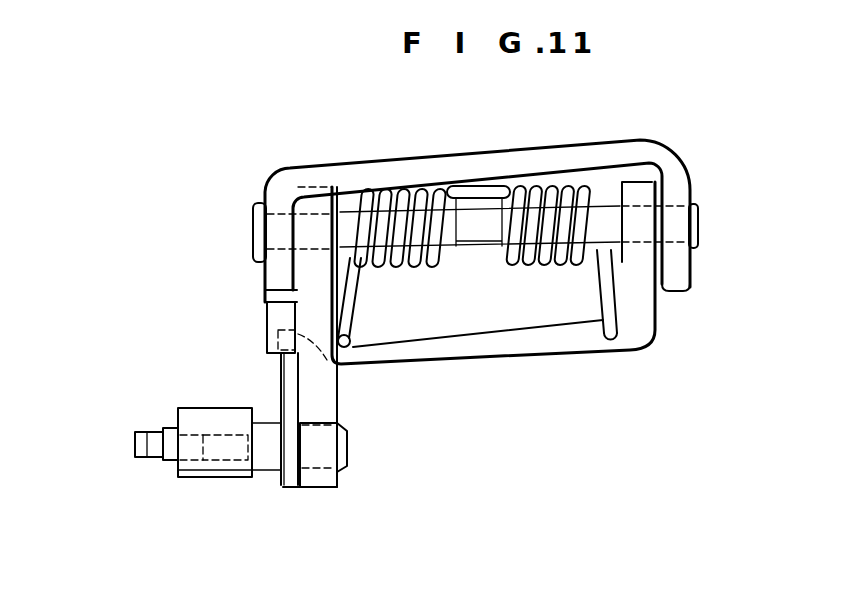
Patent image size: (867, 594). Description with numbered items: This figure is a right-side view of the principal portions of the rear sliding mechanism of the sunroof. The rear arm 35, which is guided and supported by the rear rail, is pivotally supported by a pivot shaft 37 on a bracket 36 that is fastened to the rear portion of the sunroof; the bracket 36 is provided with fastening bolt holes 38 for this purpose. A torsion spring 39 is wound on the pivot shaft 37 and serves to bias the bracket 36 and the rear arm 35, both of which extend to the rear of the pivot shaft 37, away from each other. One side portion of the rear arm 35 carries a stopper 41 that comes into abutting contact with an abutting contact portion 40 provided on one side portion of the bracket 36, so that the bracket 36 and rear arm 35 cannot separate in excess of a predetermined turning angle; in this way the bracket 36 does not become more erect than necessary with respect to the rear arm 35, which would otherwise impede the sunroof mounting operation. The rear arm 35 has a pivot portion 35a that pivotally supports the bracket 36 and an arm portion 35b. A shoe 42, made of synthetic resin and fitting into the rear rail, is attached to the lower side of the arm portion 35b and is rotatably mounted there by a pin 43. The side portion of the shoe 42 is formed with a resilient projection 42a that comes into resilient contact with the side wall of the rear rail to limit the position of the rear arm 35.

The rear arm 35 is at (656, 354).
The pivot portion 35a is at (266, 297).
The arm portion 35b is at (280, 462).
The bracket 36 is at (644, 140).
The pivot shaft 37 is at (253, 233).
The fastening bolt holes 38 is at (357, 182).
The torsion spring 39 is at (536, 273).
The abutting contact portion 40 is at (268, 333).
The stopper 41 is at (279, 380).
The shoe 42 is at (198, 478).
The resilient projection 42a is at (135, 445).
The pin 43 is at (349, 452).